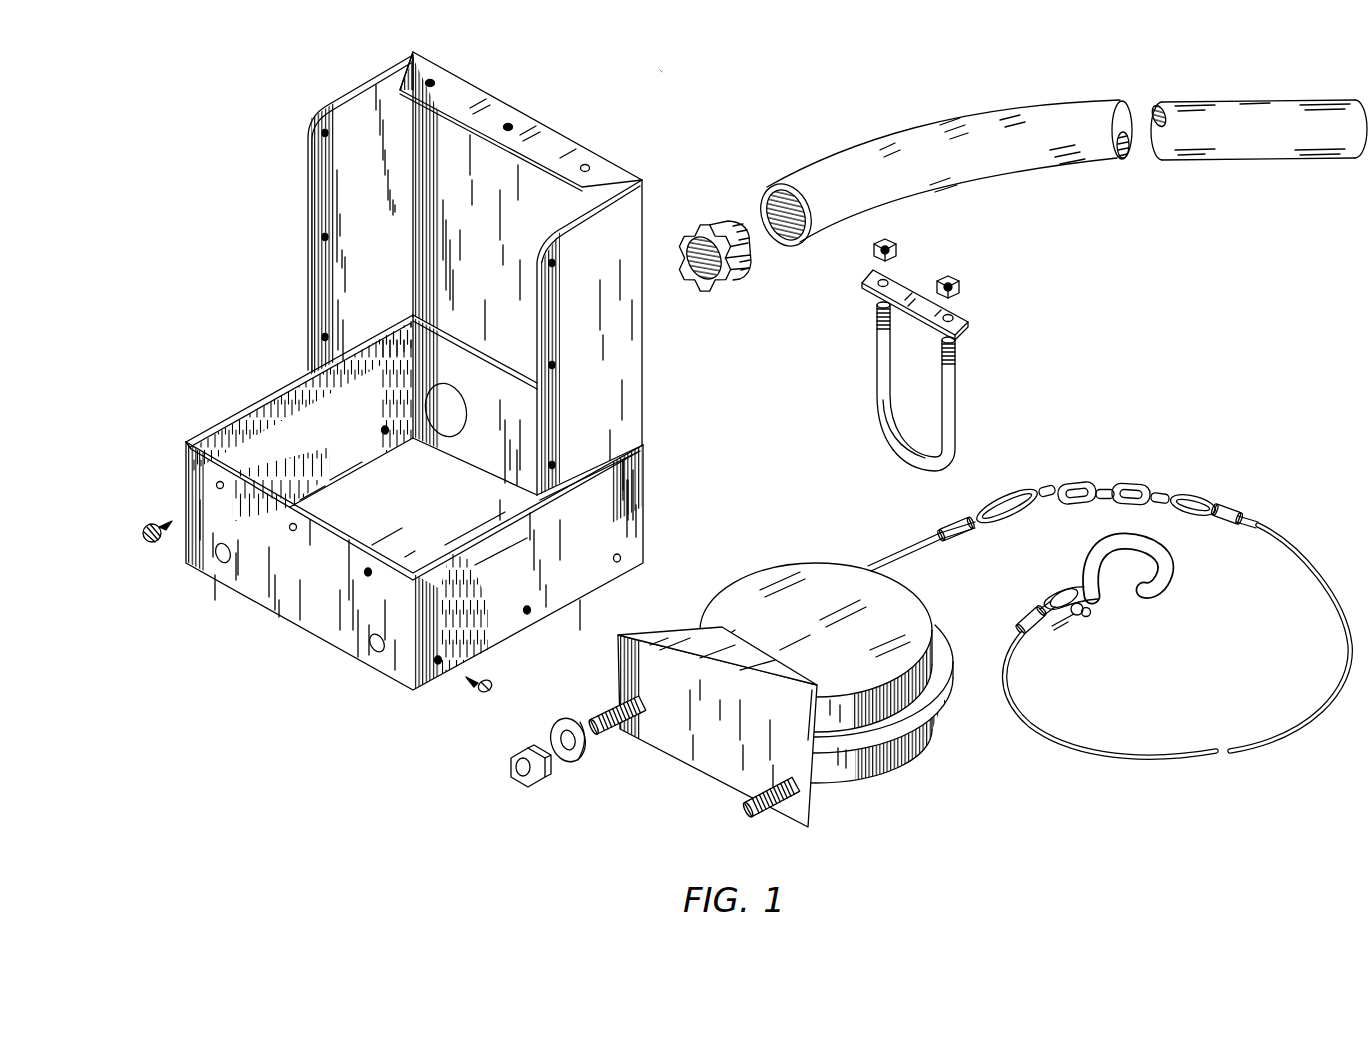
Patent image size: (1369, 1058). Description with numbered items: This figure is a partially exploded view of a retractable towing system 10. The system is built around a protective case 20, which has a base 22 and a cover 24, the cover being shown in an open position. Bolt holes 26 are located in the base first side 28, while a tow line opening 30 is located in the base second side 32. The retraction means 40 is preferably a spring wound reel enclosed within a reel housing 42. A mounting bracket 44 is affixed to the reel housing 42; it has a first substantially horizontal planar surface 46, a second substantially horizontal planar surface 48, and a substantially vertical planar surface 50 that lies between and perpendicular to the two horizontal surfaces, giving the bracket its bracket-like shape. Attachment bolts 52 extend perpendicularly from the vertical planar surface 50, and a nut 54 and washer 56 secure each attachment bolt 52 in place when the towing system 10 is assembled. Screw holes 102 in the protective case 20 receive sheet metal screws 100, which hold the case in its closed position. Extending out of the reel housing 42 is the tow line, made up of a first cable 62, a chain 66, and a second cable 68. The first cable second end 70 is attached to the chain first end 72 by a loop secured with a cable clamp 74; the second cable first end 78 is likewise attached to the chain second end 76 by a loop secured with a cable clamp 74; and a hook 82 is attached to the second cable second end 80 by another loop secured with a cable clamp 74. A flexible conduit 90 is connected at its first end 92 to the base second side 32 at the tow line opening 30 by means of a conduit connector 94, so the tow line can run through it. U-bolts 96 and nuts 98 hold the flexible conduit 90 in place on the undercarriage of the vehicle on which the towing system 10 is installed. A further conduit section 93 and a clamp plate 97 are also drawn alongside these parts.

The towing system 10 is at (728, 128).
The protective case 20 is at (275, 352).
The base 22 is at (361, 507).
The cover 24 is at (471, 288).
The bolt holes 26 is at (378, 652).
The base first side 28 is at (330, 623).
The tow line opening 30 is at (433, 418).
The base second side 32 is at (468, 455).
The retraction means 40 is at (905, 780).
The reel housing 42 is at (760, 580).
The mounting bracket 44 is at (690, 777).
The first substantially horizontal planar surface 46 is at (672, 632).
The second substantially horizontal planar surface 48 is at (813, 797).
The substantially vertical planar surface 50 is at (628, 657).
The attachment bolts 52 is at (600, 735).
The nut 54 is at (527, 787).
The washer 56 is at (577, 762).
The first cable 62 is at (912, 540).
The chain 66 is at (1080, 483).
The second cable 68 is at (1338, 597).
The first cable second end 70 is at (948, 540).
The chain first end 72 is at (1013, 495).
The cable clamp 74 is at (962, 517).
The chain second end 76 is at (1173, 497).
The second cable first end 78 is at (1256, 521).
The second cable second end 80 is at (1022, 643).
The hook 82 is at (1100, 545).
The flexible conduit 90 is at (853, 155).
The first end 92 is at (780, 244).
The straight tube section 93 is at (1345, 107).
The conduit connector 94 is at (718, 222).
The U-bolts 96 is at (956, 450).
The clamp plate 97 is at (898, 285).
The nuts 98 is at (890, 240).
The sheet metal screws 100 is at (482, 697).
The screw holes 102 is at (439, 667).